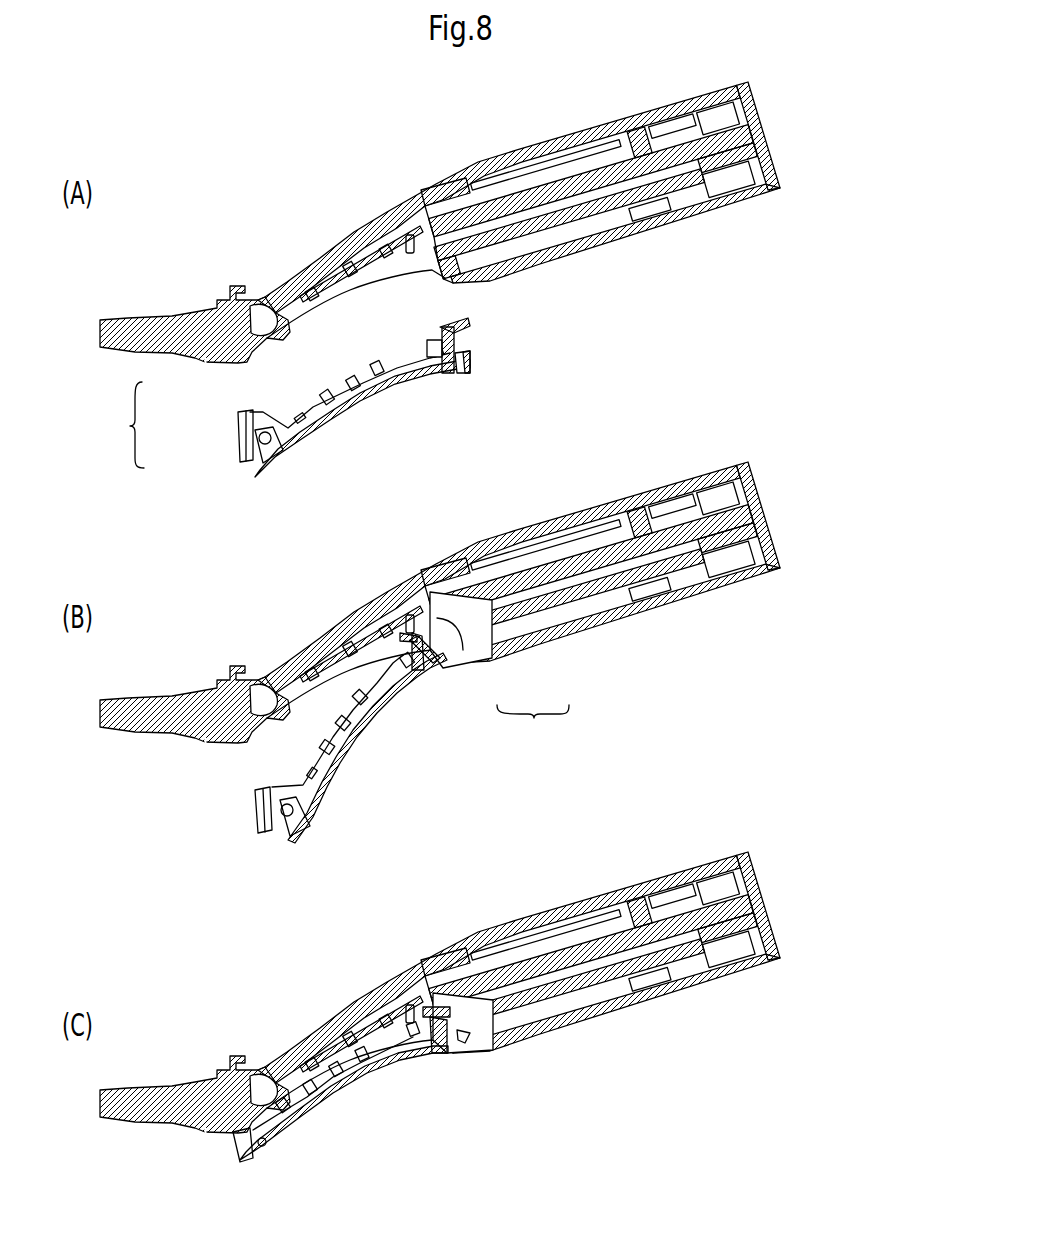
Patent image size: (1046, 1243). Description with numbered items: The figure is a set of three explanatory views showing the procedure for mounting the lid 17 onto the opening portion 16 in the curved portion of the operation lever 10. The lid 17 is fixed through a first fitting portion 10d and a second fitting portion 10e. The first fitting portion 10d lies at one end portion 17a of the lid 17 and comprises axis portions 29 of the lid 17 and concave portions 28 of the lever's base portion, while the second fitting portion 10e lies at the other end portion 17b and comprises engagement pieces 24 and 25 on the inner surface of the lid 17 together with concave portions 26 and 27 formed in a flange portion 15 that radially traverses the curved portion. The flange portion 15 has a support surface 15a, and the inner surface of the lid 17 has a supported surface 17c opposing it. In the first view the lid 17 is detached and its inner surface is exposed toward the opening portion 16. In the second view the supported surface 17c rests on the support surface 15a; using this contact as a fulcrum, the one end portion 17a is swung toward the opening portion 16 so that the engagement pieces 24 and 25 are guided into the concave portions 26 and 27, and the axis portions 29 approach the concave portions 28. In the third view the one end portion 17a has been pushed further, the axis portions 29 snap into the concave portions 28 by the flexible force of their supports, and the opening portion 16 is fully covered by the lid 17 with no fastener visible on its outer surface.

The operation lever 10 is at (440, 587).
The first fitting portion 10d is at (116, 425).
The second fitting portion 10e is at (533, 732).
The flange portion 15 is at (479, 663).
The support surface 15a is at (361, 264).
The opening portion 16 is at (356, 304).
The lid 17 is at (393, 414).
The one end portion 17a is at (256, 480).
The other end portion 17b is at (462, 378).
The supported surface 17c is at (548, 369).
The engagement piece 24 is at (470, 322).
The engagement piece 25 is at (462, 1045).
The concave portion 26 is at (460, 640).
The concave portion 27 is at (435, 1056).
The concave portion 28 is at (195, 327).
The axis portion 29 is at (263, 319).